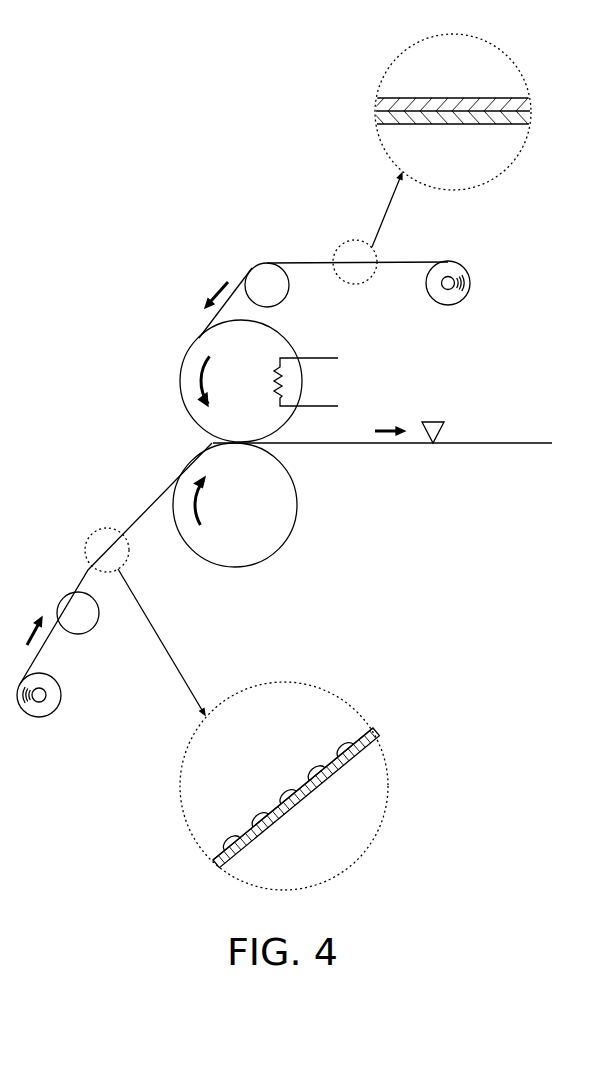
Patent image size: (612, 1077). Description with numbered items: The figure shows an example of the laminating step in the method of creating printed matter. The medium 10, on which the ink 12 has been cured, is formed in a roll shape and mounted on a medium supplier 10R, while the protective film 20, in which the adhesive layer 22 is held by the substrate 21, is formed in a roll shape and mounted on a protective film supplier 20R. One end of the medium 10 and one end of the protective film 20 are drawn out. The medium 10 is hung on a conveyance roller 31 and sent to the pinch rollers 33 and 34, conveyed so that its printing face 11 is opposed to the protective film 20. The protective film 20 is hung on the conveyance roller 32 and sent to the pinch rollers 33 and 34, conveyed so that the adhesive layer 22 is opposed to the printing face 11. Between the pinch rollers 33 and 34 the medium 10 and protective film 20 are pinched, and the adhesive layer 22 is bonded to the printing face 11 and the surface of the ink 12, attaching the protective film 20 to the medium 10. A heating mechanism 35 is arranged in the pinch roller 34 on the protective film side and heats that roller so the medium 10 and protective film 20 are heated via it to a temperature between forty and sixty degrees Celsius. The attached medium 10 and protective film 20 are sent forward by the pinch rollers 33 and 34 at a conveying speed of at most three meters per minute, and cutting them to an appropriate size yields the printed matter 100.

The medium 10 is at (143, 510).
The medium supplier 10R is at (39, 725).
The printing face 11 is at (367, 726).
The ink 12 is at (254, 818).
The protective film 20 is at (209, 317).
The protective film supplier 20R is at (479, 276).
The substrate 21 is at (453, 125).
The adhesive layer 22 is at (467, 98).
The conveyance roller 31 is at (94, 627).
The conveyance roller 32 is at (288, 292).
The pinch roller 33 is at (288, 536).
The pinch roller 34 is at (284, 338).
The heating mechanism 35 is at (296, 384).
The printed matter 100 is at (521, 453).